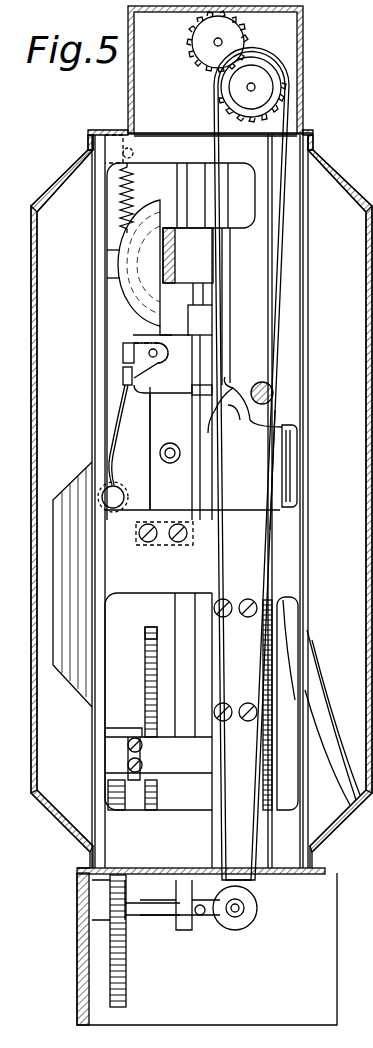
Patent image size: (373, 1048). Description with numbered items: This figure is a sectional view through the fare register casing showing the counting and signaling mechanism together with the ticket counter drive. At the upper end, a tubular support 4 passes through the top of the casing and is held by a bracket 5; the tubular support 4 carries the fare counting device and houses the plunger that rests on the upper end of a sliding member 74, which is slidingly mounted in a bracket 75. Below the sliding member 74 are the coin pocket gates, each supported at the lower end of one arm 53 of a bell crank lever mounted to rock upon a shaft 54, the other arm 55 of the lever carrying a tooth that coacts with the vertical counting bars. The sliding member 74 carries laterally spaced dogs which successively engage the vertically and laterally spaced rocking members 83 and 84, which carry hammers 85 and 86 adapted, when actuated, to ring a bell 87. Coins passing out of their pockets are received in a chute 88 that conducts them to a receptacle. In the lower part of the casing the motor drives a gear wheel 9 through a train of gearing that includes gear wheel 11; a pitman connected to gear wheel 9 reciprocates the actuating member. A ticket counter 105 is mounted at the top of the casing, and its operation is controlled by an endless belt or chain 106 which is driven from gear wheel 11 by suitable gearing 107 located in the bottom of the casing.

The tubular support 4 is at (186, 177).
The bracket 5 is at (213, 270).
The gear wheel 9 is at (145, 638).
The gear wheel 11 is at (128, 978).
The arm of bell crank lever 53 is at (283, 442).
The shaft 54 is at (258, 386).
The arm of bell crank lever 55 is at (226, 422).
The sliding member 74 is at (198, 354).
The bracket 75 is at (210, 322).
The rocking member 83 is at (123, 375).
The rocking member 84 is at (123, 352).
The hammer 85 is at (108, 440).
The hammer 86 is at (124, 496).
The bell 87 is at (70, 492).
The chute 88 is at (320, 665).
The ticket counter 105 is at (290, 58).
The endless belt or chain 106 is at (270, 548).
The gearing 107 is at (155, 915).